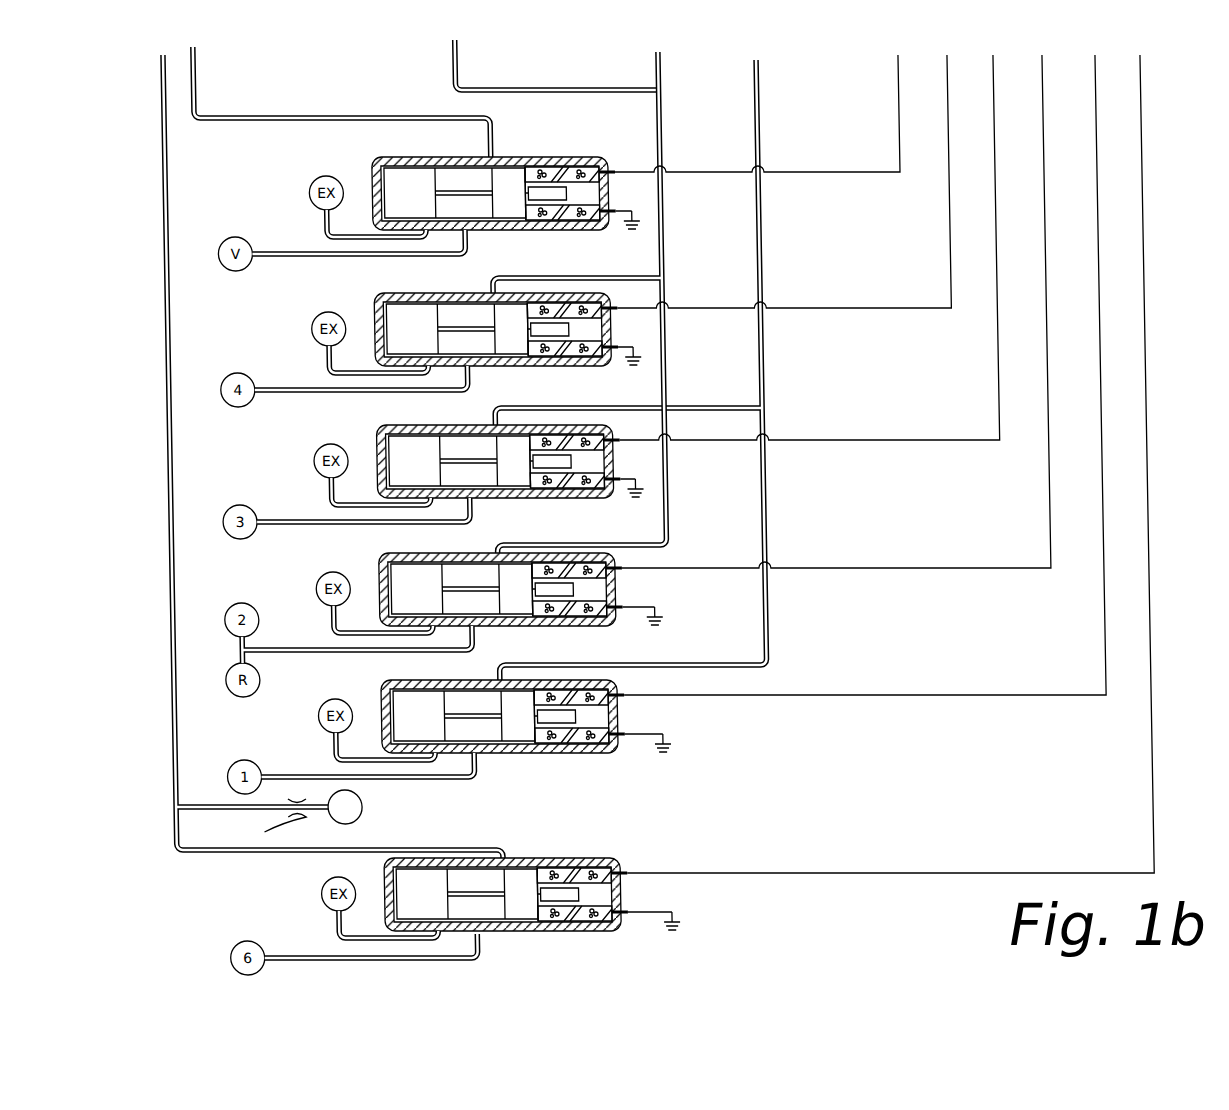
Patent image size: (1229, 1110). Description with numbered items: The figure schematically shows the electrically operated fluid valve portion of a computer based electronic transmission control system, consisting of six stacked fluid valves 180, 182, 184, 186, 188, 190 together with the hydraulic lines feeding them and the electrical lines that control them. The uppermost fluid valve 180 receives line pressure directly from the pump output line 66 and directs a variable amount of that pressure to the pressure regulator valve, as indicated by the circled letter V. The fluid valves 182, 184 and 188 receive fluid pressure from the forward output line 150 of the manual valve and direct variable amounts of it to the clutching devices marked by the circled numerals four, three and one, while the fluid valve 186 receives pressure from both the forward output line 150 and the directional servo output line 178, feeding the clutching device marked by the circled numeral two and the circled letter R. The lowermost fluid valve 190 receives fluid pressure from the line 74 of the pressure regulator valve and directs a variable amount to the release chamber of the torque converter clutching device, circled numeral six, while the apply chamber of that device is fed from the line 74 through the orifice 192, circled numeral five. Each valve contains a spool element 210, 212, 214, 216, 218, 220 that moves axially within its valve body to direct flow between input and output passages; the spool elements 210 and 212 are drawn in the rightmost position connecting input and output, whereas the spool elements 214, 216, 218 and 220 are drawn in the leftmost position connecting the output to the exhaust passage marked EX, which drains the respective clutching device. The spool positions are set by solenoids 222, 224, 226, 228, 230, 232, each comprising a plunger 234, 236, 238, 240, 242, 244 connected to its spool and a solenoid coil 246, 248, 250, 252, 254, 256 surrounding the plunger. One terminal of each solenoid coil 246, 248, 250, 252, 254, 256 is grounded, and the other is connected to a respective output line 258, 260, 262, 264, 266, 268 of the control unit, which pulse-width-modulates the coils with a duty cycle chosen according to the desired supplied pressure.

The line 74 is at (160, 306).
The pump output line 66 is at (196, 78).
The forward output line 150 is at (458, 62).
The directional servo output line 178 is at (661, 80).
The orifice 192 is at (289, 820).
The fluid valve 180 is at (371, 165).
The fluid valve 182 is at (371, 298).
The fluid valve 184 is at (371, 430).
The fluid valve 186 is at (371, 558).
The fluid valve 188 is at (371, 684).
The fluid valve 190 is at (393, 858).
The spool element 210 is at (505, 168).
The spool element 212 is at (505, 355).
The spool element 214 is at (503, 487).
The spool element 216 is at (502, 614).
The spool element 218 is at (502, 741).
The spool element 220 is at (515, 919).
The solenoid 222 is at (597, 188).
The solenoid 224 is at (597, 324).
The solenoid 226 is at (597, 457).
The solenoid 228 is at (597, 585).
The solenoid 230 is at (597, 712).
The solenoid 232 is at (597, 890).
The plunger 234 is at (548, 200).
The plunger 236 is at (578, 303).
The plunger 238 is at (552, 461).
The plunger 240 is at (554, 589).
The plunger 242 is at (556, 716).
The plunger 244 is at (578, 890).
The solenoid coil 246 is at (592, 167).
The solenoid coil 248 is at (596, 351).
The solenoid coil 250 is at (594, 489).
The solenoid coil 252 is at (598, 616).
The solenoid coil 254 is at (575, 743).
The solenoid coil 256 is at (600, 872).
The output line 258 is at (858, 173).
The output line 260 is at (866, 309).
The output line 262 is at (924, 441).
The output line 264 is at (912, 569).
The output line 266 is at (864, 696).
The output line 268 is at (908, 873).